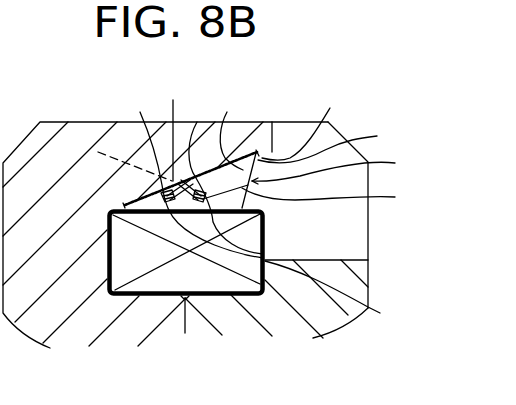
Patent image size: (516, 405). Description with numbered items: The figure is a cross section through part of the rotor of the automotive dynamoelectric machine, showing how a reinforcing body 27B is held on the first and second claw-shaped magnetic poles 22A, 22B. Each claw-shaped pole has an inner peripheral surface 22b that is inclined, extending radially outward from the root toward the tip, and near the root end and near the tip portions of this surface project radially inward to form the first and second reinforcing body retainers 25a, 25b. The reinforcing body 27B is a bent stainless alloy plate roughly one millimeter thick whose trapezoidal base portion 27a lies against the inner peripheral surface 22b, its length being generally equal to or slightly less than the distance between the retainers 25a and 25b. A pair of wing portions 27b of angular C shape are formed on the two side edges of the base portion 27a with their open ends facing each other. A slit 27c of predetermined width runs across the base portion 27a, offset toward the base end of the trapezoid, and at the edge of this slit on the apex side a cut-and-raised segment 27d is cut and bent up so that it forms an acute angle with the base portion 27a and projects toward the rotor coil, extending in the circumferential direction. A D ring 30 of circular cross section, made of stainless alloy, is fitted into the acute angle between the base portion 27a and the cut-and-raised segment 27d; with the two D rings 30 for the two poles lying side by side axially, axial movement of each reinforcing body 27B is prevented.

The first claw-shaped magnetic pole 22A is at (293, 138).
The second claw-shaped magnetic pole 22B is at (53, 152).
The inner peripheral surface 22b is at (223, 123).
The first reinforcing body retainer 25a is at (316, 118).
The second reinforcing body retainer 25b is at (97, 148).
The base portion 27a is at (336, 137).
The wing portion 27b is at (337, 198).
The slit 27c is at (187, 171).
The cut-and-raised segment 27d is at (208, 163).
The reinforcing body 27B is at (342, 165).
The D ring 30 is at (380, 313).